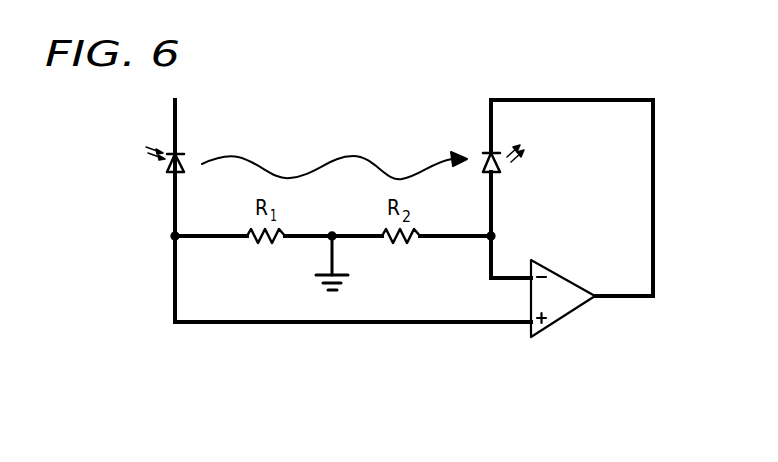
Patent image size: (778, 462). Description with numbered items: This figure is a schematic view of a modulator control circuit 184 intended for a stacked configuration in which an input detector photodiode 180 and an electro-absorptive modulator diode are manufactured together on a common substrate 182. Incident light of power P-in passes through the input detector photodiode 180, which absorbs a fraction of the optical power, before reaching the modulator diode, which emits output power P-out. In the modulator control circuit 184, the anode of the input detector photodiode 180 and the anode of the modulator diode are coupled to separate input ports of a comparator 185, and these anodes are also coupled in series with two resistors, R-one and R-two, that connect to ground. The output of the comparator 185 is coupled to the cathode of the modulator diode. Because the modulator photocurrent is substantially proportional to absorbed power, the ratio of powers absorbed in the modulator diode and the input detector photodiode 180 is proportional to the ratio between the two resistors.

The input detector photodiode 180 is at (170, 174).
The common substrate 182 is at (500, 174).
The modulator control circuit 184 is at (607, 74).
The comparator 185 is at (565, 279).